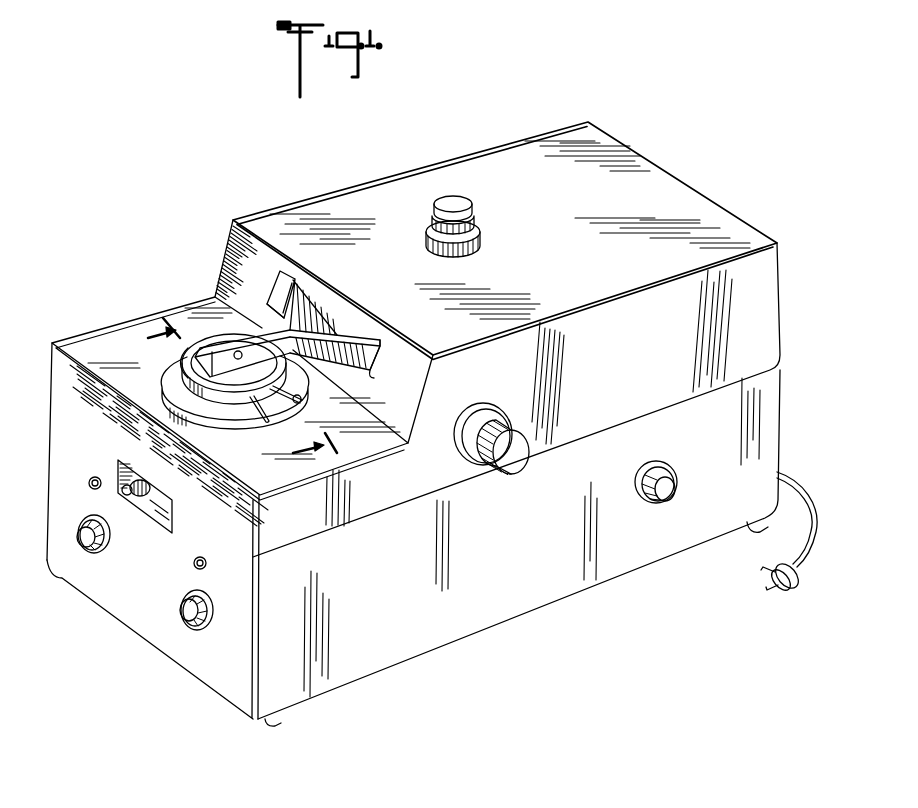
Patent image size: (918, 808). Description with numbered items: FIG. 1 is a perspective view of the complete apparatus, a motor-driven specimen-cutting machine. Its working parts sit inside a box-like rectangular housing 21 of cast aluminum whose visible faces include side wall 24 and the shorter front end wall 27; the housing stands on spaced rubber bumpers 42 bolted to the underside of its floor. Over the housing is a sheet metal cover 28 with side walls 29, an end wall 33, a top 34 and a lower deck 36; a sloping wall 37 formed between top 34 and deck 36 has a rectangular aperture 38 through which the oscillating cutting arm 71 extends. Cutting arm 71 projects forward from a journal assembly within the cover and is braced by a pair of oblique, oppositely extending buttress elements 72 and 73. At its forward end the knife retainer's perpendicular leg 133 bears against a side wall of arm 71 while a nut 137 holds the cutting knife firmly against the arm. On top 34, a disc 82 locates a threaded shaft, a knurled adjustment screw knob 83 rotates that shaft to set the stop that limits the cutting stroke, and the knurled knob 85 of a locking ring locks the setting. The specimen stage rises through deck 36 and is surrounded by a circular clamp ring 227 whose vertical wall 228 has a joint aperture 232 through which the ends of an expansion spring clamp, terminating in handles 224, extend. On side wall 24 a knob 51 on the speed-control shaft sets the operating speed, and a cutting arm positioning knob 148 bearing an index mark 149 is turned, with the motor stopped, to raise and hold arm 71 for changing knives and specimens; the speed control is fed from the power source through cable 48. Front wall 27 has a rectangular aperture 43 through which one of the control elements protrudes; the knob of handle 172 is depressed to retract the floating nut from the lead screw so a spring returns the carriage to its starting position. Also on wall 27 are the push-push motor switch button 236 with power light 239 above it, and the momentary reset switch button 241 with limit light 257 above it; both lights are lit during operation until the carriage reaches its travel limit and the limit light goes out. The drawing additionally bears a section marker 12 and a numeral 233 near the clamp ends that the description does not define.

The section line 12 is at (251, 386).
The housing 21 is at (611, 589).
The side wall 24 is at (430, 632).
The front end wall 27 is at (128, 628).
The cover 28 is at (491, 139).
The side walls 29 is at (768, 318).
The end wall 33 is at (50, 350).
The top 34 is at (567, 247).
The lower deck 36 is at (137, 333).
The sloping wall 37 is at (420, 377).
The rectangular aperture 38 is at (367, 376).
The rubber bumpers 42 is at (271, 718).
The rectangular aperture 43 is at (170, 533).
The cable 48 is at (805, 497).
The knob 51 is at (665, 500).
The cutting arm 71 is at (262, 324).
The buttress element 72 is at (293, 292).
The buttress element 73 is at (320, 349).
The disc 82 is at (468, 257).
The knurled adjustment screw knob 83 is at (463, 208).
The knurled knob 85 is at (432, 236).
The leg 133 is at (230, 346).
The nut 137 is at (234, 366).
The cutting arm positioning knob 148 is at (505, 472).
The index mark 149 is at (482, 412).
The handle 172 is at (165, 515).
The handles 224 is at (269, 426).
The clamp ring 227 is at (176, 373).
The vertical wall 228 is at (178, 383).
The joint aperture 232 is at (230, 410).
The pin with loop 233 is at (305, 396).
The motor switch button 236 is at (83, 526).
The power light 239 is at (97, 477).
The reset switch button 241 is at (182, 607).
The limit light 257 is at (205, 568).